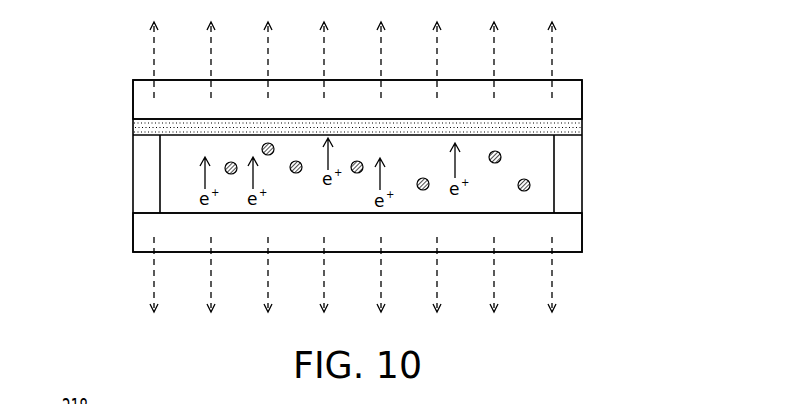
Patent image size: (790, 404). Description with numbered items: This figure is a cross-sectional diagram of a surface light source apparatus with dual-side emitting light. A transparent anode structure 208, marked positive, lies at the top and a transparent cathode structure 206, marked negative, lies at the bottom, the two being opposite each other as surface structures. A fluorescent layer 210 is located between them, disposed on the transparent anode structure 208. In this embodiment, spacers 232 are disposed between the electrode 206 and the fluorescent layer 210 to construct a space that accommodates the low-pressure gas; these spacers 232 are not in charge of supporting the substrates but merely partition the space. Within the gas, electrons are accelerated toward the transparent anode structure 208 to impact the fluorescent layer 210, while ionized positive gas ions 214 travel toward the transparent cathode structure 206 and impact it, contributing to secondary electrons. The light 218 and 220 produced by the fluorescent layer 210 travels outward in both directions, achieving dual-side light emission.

The transparent cathode structure 206 is at (573, 227).
The transparent anode structure 208 is at (570, 106).
The fluorescent layer 210 is at (573, 126).
The ionized positive gas ions 214 is at (531, 185).
The light 218 is at (155, 59).
The light 220 is at (552, 274).
The spacers 232 is at (152, 176).